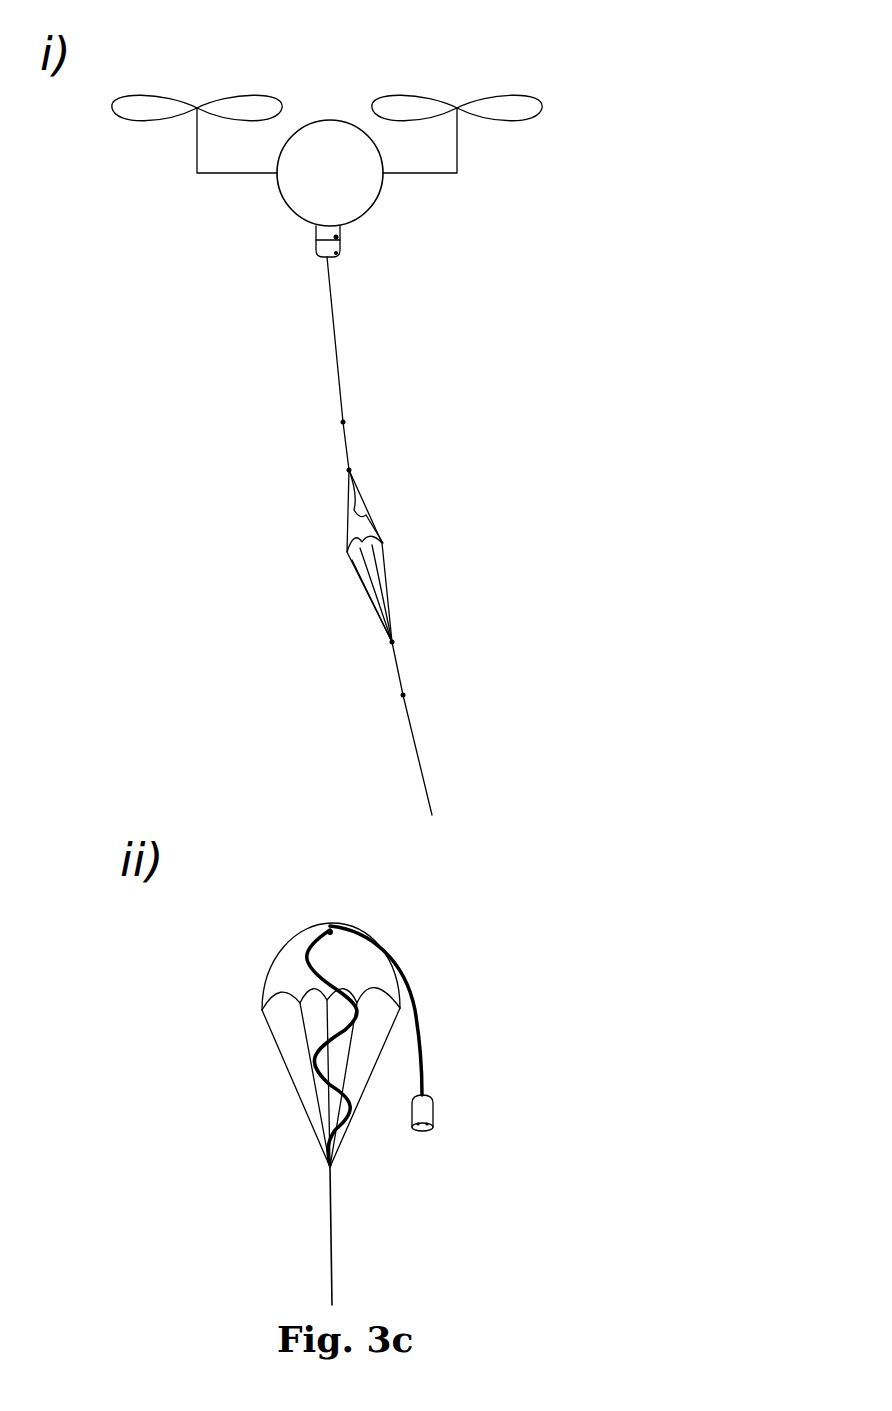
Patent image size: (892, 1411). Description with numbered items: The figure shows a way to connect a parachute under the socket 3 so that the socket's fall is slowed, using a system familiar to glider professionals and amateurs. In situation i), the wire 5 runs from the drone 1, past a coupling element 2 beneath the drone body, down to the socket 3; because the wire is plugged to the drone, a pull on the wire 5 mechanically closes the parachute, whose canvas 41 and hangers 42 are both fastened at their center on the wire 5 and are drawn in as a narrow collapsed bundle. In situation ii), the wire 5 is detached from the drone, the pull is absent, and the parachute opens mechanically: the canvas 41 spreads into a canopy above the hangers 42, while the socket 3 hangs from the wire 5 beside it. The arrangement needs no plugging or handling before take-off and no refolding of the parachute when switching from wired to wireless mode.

The drone 1 is at (592, 85).
The coupling / release mechanism 2 is at (338, 237).
The socket 3 is at (434, 1108).
The wire 5 is at (403, 695).
The canvas 41 is at (348, 520).
The hangers 42 is at (359, 585).